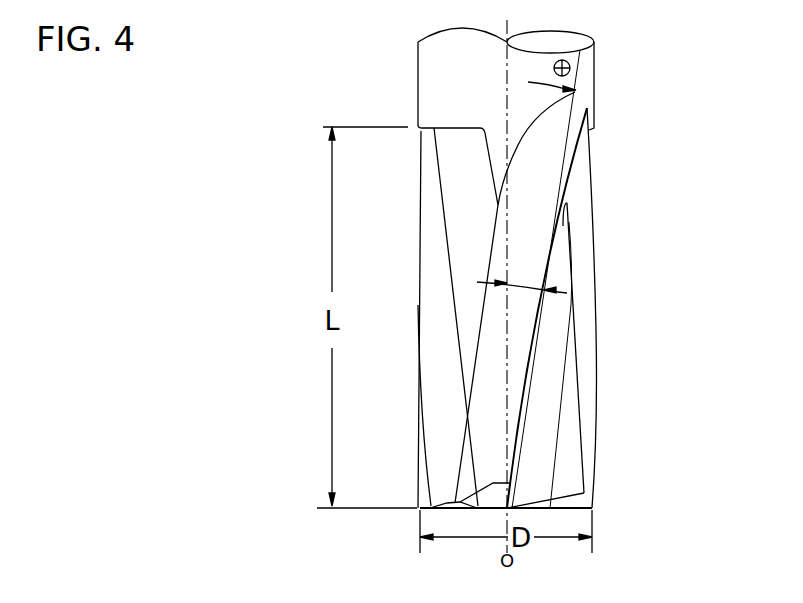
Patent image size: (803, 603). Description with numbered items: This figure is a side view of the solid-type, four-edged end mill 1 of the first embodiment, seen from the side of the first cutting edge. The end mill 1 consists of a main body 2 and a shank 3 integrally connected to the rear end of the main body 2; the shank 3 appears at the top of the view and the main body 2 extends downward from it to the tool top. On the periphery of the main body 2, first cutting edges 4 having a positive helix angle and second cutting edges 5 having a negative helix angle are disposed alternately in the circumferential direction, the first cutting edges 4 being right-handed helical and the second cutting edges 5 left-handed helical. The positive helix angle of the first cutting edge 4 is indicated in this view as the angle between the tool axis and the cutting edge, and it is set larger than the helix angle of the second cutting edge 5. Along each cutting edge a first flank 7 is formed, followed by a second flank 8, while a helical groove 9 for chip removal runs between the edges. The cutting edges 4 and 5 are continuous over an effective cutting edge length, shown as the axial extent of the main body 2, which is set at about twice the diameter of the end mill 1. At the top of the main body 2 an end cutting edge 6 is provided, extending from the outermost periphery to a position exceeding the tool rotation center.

The end mill 1 is at (606, 80).
The main body 2 is at (570, 180).
The shank 3 is at (588, 63).
The first cutting edge 4 is at (515, 415).
The second cutting edge 5 is at (416, 363).
The end cutting edge 6 is at (563, 508).
The first flank 7 is at (522, 437).
The second flank 8 is at (567, 263).
The helical groove 9 is at (428, 228).